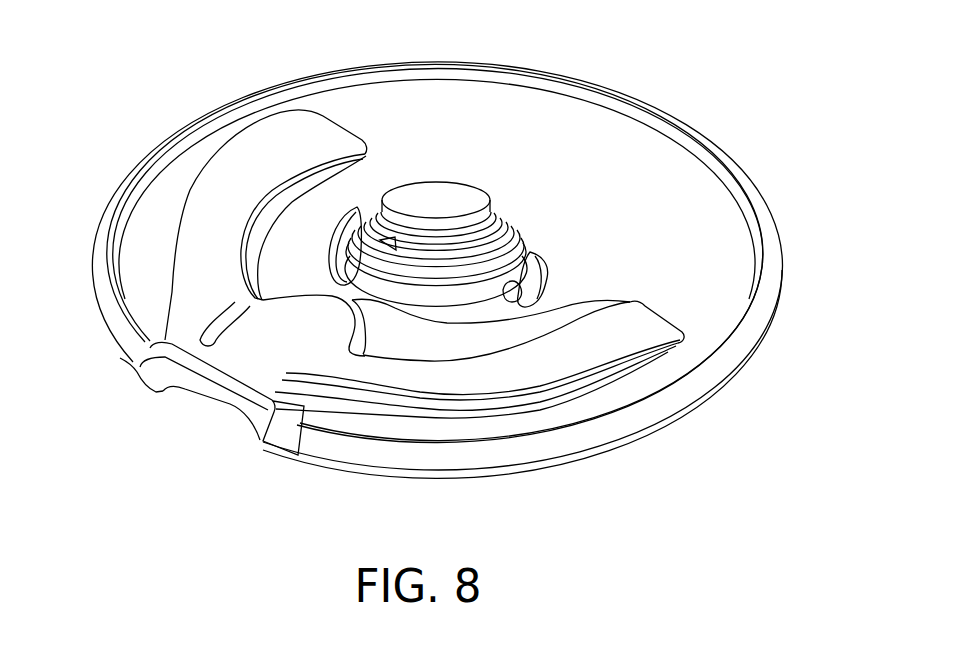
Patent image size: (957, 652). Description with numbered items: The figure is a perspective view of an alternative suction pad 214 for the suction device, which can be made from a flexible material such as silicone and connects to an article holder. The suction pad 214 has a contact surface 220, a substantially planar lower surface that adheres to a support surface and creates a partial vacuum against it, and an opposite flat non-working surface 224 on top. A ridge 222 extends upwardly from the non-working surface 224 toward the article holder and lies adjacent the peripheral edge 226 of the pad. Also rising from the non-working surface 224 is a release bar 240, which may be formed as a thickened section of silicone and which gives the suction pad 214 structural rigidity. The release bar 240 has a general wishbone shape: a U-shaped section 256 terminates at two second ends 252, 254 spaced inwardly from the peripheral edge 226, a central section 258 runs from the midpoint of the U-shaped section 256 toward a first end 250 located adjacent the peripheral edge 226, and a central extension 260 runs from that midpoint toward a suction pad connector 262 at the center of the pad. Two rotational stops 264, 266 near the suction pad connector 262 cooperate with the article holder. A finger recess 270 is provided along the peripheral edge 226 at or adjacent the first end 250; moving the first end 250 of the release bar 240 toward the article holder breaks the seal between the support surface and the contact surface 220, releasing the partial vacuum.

The suction pad 214 is at (510, 115).
The contact surface 220 is at (620, 450).
The ridge 222 is at (745, 192).
The non-working surface 224 is at (423, 96).
The peripheral edge 226 is at (780, 317).
The release bar 240 is at (256, 303).
The first end 250 is at (222, 363).
The second end 252 is at (326, 131).
The second end 254 is at (648, 318).
The U-shaped section 256 is at (204, 257).
The central section 258 is at (288, 394).
The central extension 260 is at (367, 328).
The suction pad connector 262 is at (475, 205).
The rotational stop 264 is at (362, 210).
The rotational stop 266 is at (527, 302).
The finger recess 270 is at (178, 395).